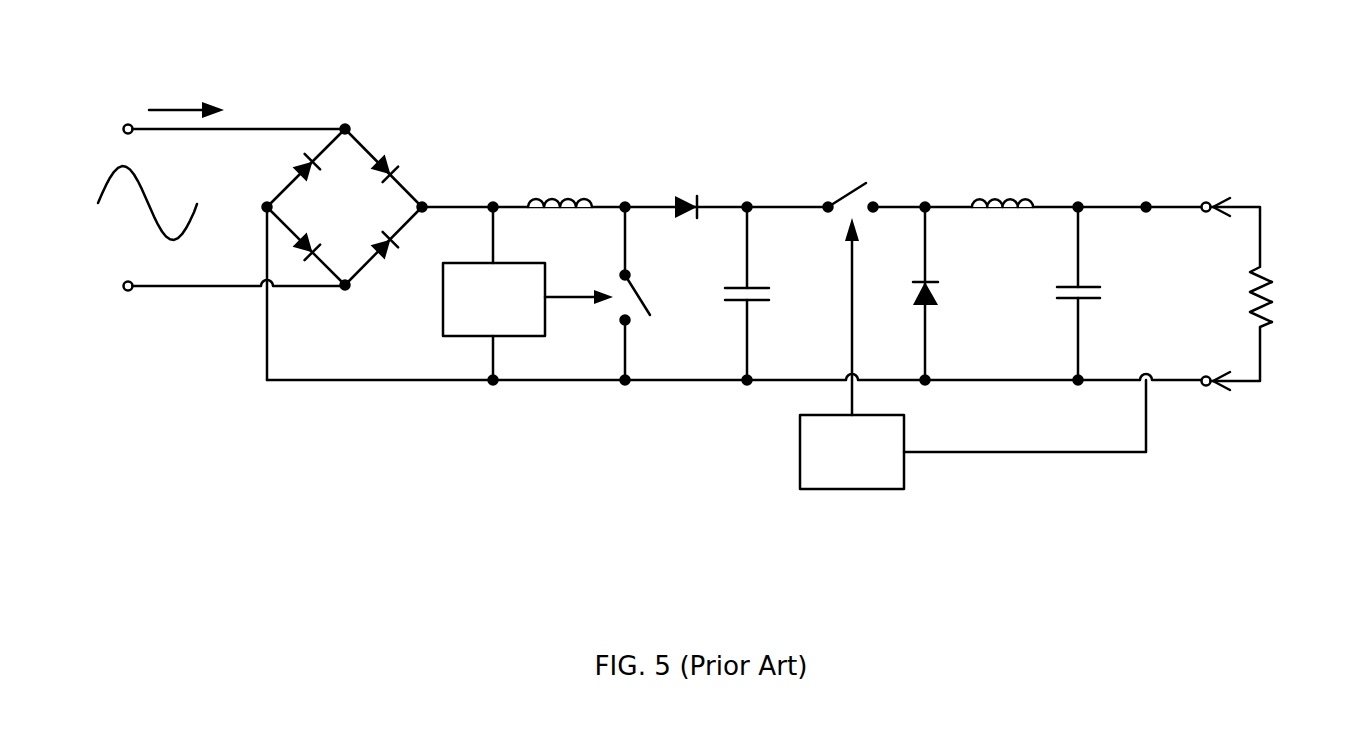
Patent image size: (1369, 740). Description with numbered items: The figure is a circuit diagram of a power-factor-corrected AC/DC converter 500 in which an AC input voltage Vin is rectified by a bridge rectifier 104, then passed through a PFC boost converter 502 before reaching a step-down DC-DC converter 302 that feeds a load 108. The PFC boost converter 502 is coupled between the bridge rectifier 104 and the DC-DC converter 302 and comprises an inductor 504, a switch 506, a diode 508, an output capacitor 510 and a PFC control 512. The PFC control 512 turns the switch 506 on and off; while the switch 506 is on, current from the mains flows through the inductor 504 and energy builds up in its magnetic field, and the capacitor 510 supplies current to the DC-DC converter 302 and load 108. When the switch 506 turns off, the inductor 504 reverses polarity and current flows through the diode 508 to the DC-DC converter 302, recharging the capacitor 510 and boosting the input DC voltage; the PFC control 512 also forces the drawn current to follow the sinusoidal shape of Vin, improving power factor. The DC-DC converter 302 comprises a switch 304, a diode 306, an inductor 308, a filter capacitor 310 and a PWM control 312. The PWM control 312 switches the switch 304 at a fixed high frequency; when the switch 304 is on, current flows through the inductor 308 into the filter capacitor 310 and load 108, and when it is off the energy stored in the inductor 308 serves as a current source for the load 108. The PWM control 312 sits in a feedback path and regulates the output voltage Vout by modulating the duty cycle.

The power-factor-corrected AC/DC converter 500 is at (170, 491).
The bridge rectifier 104 is at (442, 87).
The PFC boost converter 502 is at (463, 87).
The inductor 504 is at (560, 187).
The switch 506 is at (652, 293).
The diode 508 is at (687, 192).
The output capacitor 510 is at (732, 293).
The PFC control 512 is at (506, 293).
The DC-DC converter 302 is at (768, 87).
The switch 304 is at (851, 187).
The diode 306 is at (946, 293).
The inductor 308 is at (1002, 187).
The filter capacitor 310 is at (1058, 293).
The pulse-width modulator (PWM) control 312 is at (953, 353).
The load 108 is at (1268, 294).